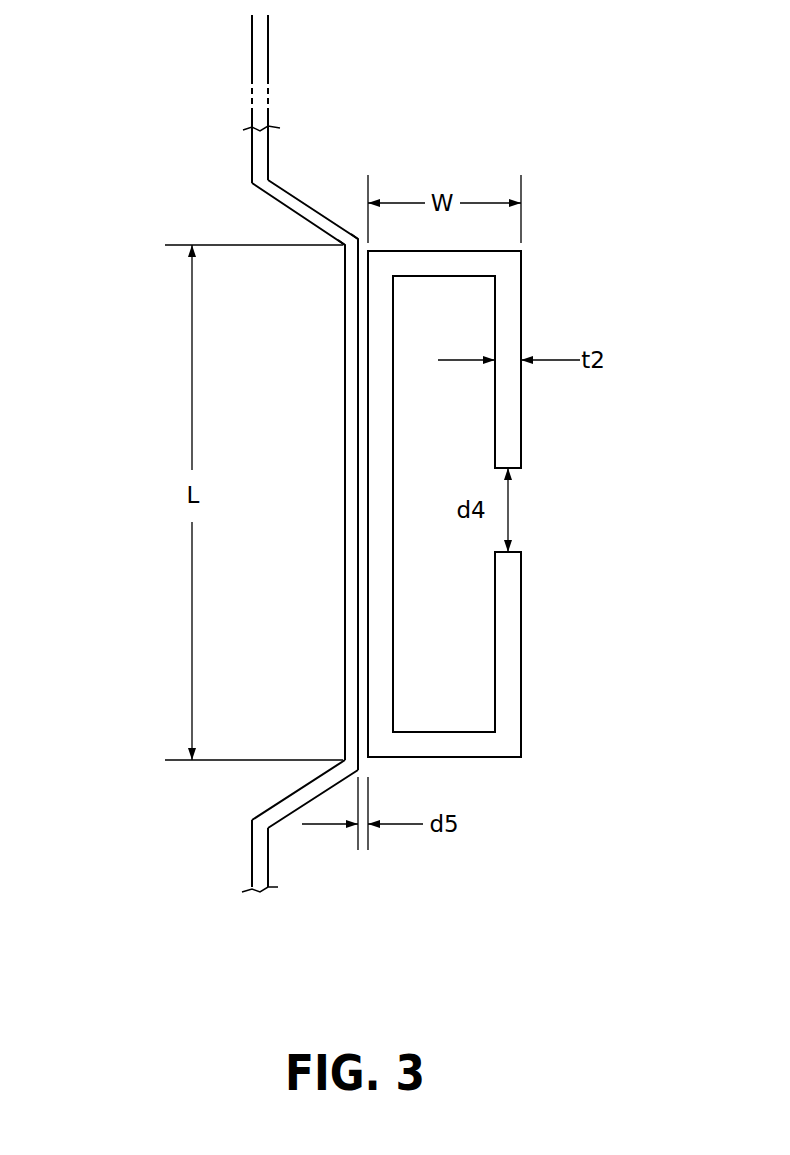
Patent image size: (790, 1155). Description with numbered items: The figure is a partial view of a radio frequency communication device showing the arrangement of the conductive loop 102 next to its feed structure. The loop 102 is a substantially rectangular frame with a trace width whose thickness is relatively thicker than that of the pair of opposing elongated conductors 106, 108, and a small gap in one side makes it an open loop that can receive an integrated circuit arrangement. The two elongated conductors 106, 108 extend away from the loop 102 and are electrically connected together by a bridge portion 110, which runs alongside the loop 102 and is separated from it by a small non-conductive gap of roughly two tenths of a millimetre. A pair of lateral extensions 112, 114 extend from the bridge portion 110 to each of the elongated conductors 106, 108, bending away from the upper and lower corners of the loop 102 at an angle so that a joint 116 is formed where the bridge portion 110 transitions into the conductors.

The conductive loop 102 is at (553, 183).
The elongated conductor 106 is at (250, 158).
The elongated conductor 108 is at (252, 856).
The bridge portion 110 is at (345, 548).
The lateral extension 112 is at (283, 209).
The lateral extension 114 is at (277, 800).
The joint 116 is at (343, 245).